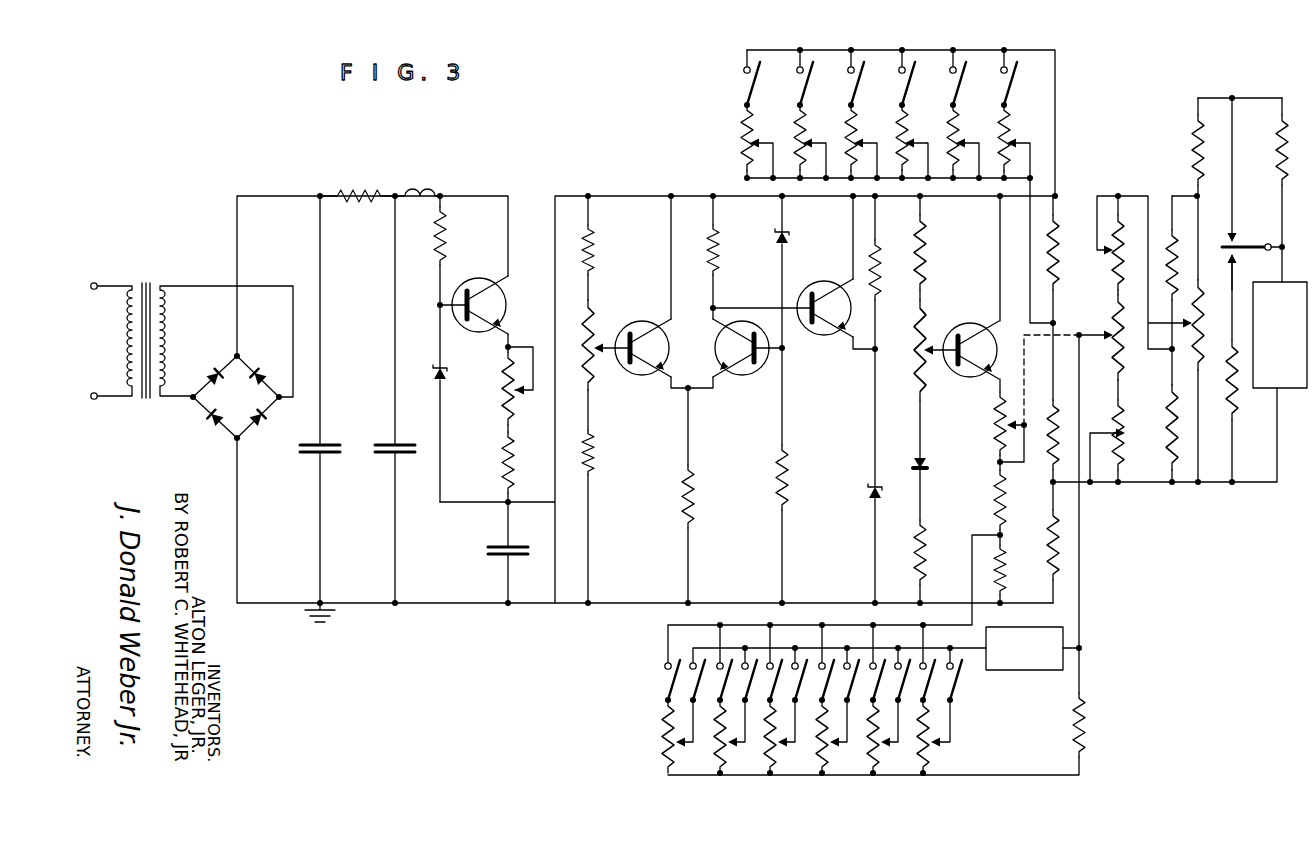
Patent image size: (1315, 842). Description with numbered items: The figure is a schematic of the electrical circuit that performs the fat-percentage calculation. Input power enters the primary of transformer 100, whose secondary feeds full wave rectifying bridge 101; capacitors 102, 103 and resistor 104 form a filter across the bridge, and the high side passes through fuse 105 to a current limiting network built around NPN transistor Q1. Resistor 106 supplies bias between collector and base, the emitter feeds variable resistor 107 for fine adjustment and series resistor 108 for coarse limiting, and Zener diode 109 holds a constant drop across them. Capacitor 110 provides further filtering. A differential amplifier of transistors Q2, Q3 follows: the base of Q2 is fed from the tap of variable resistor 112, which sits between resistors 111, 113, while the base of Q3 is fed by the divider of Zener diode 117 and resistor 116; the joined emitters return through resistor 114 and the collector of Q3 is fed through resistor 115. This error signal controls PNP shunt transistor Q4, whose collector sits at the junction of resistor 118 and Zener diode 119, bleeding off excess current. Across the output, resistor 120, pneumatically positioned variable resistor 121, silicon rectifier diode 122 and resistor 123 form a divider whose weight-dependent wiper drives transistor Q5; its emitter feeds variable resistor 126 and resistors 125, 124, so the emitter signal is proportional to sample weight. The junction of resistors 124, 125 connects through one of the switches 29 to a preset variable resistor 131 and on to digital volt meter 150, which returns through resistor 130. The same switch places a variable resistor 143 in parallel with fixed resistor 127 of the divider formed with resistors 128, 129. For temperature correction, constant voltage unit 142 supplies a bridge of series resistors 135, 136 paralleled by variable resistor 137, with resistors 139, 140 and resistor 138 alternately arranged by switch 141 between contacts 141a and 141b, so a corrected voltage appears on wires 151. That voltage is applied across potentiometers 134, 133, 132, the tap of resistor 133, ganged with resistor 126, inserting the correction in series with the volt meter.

The transformer 100 is at (142, 276).
The full wave rectifying bridge 101 is at (206, 352).
The capacitor 102 is at (300, 448).
The capacitor 103 is at (380, 447).
The resistor 104 is at (362, 190).
The fuse 105 is at (430, 188).
The resistor 106 is at (446, 240).
The variable resistor 107 is at (502, 378).
The resistor 108 is at (502, 465).
The Zener diode 109 is at (447, 374).
The capacitor 110 is at (487, 551).
The resistor 111 is at (595, 250).
The variable resistor 112 is at (596, 320).
The resistor 113 is at (596, 452).
The resistor 114 is at (694, 500).
The resistor 115 is at (717, 254).
The resistor 116 is at (790, 470).
The Zener diode 117 is at (792, 240).
The resistor 118 is at (880, 262).
The Zener diode 119 is at (868, 492).
The resistor 120 is at (926, 260).
The variable resistor 121 is at (926, 330).
The silicon rectifier diode 122 is at (926, 463).
The resistor 123 is at (926, 556).
The resistor 124 is at (1005, 560).
The resistor 125 is at (994, 496).
The variable resistor 126 is at (994, 420).
The fixed resistor 127 is at (1060, 270).
The resistor 128 is at (1045, 440).
The resistor 129 is at (1048, 546).
The resistor 130 is at (1086, 722).
The variable resistors 131 is at (712, 760).
The potentiometer 132 is at (1112, 422).
The potentiometer 133 is at (1112, 336).
The potentiometer 134 is at (1114, 262).
The resistor 135 is at (1168, 265).
The resistor 136 is at (1168, 440).
The variable resistor 137 is at (1204, 300).
The resistor 138 is at (1226, 380).
The resistor 139 is at (1192, 152).
The resistor 140 is at (1278, 152).
The switch 141 is at (1222, 246).
The contact 141a is at (1236, 240).
The contact 141b is at (1236, 262).
The constant voltage unit 142 is at (1266, 390).
The variable resistors 143 is at (864, 130).
The digital volt meter 150 is at (1030, 672).
The wires 151 is at (1160, 349).
The switches 29 is at (805, 90).
The NPN transistor Q1 is at (486, 278).
The transistor Q2 is at (640, 378).
The transistor Q3 is at (745, 378).
The shunt transistor Q4 is at (824, 338).
The transistor Q5 is at (980, 378).